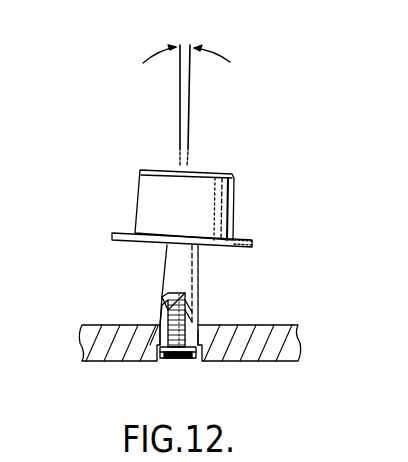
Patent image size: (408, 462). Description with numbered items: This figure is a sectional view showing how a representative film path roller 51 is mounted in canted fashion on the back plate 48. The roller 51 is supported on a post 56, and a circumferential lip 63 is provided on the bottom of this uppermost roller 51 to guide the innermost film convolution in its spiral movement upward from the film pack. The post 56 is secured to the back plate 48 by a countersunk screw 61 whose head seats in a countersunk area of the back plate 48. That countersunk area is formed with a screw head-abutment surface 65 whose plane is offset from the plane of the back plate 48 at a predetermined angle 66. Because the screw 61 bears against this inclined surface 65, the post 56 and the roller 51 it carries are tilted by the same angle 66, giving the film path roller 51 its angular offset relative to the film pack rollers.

The predetermined angle 66 is at (187, 44).
The film path roller 51 is at (203, 203).
The circumferential lip 63 is at (127, 232).
The post 56 is at (182, 280).
The countersunk screw 61 is at (182, 338).
The screw head-abutment surface 65 is at (159, 361).
The back plate 48 is at (287, 347).